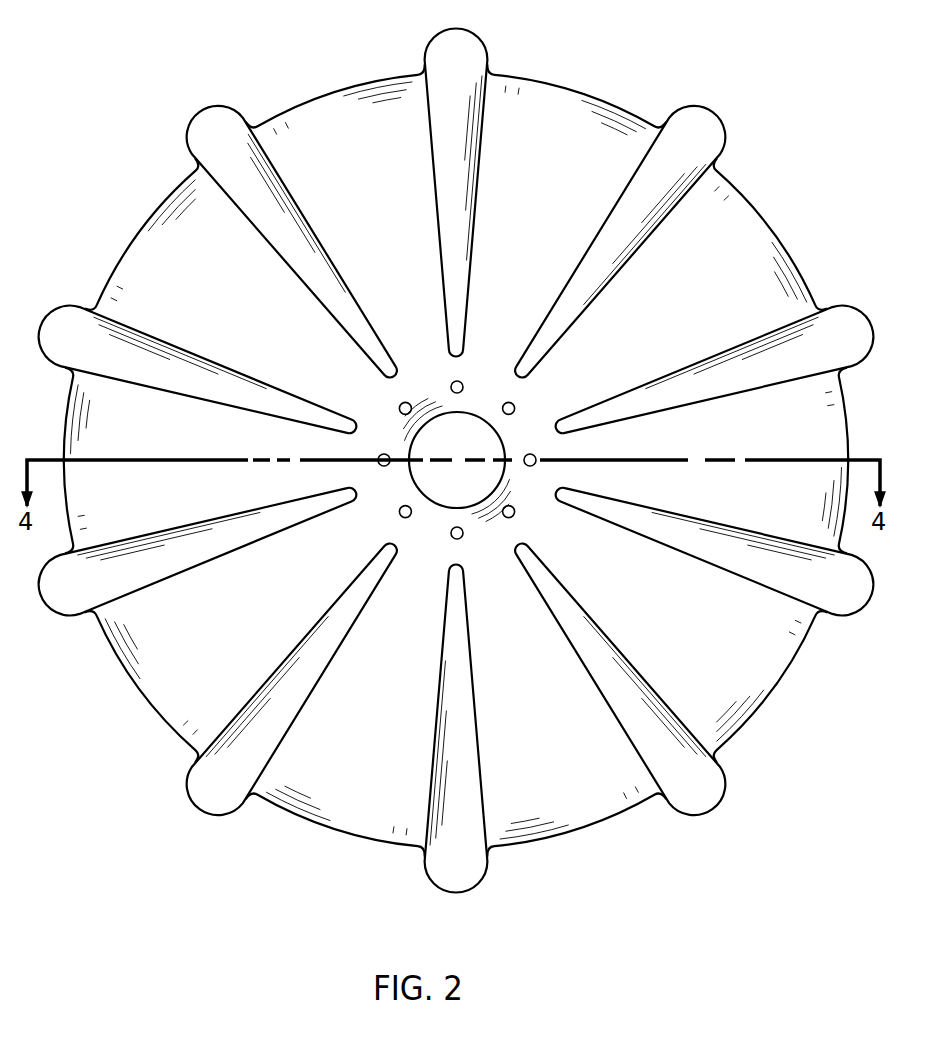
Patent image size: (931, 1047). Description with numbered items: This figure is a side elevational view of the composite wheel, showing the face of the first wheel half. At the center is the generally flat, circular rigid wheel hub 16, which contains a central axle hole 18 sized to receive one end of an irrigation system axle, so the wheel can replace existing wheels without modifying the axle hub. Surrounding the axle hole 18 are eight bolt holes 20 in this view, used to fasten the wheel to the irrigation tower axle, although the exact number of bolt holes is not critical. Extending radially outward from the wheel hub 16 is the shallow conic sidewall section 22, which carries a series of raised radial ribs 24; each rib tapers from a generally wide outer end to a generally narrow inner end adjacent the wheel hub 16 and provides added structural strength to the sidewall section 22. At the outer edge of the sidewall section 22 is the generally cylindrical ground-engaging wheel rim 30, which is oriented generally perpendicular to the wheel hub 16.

The wheel hub 16 is at (432, 525).
The central axle hole 18 is at (427, 473).
The bolt holes 20 is at (392, 517).
The sidewall section 22 is at (667, 625).
The radial ribs 24 is at (658, 200).
The ground-engaging wheel rim 30 is at (122, 256).